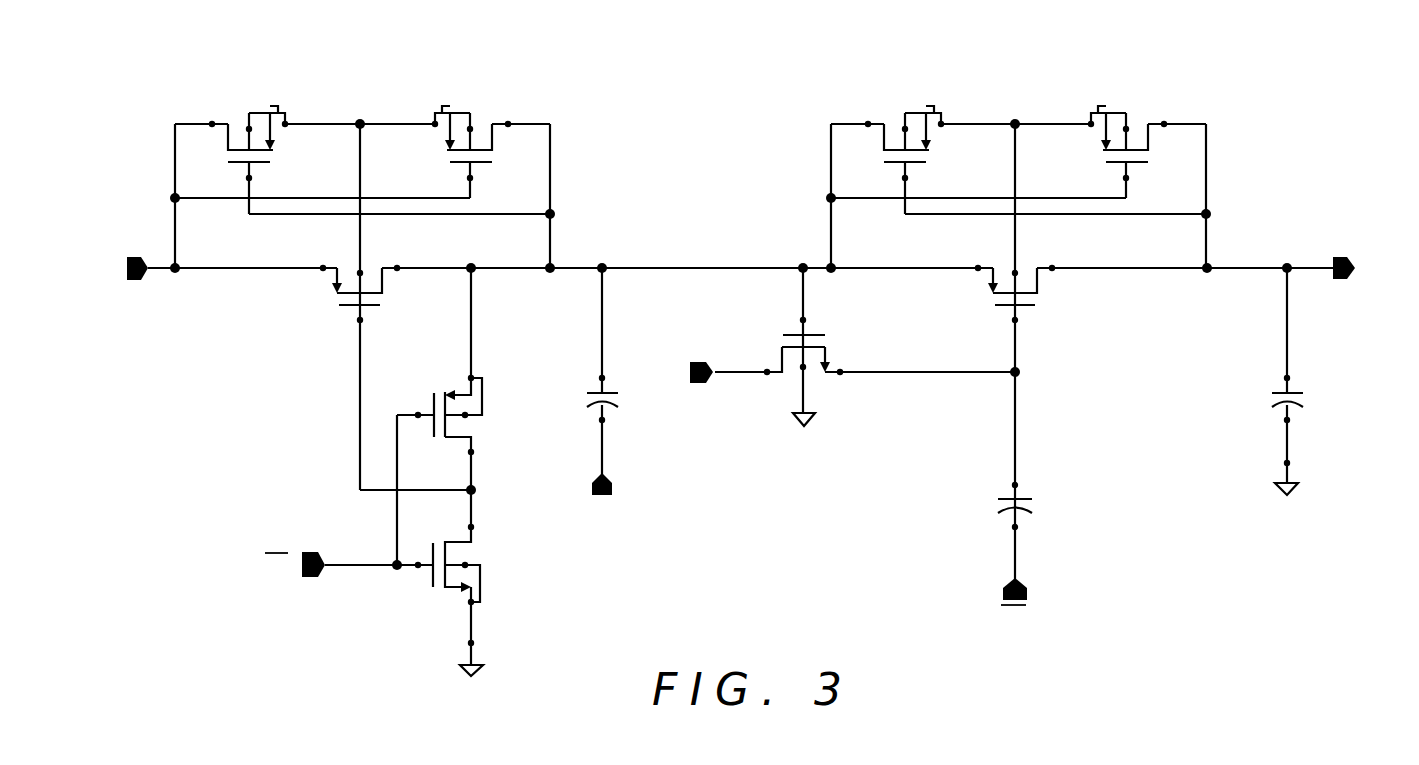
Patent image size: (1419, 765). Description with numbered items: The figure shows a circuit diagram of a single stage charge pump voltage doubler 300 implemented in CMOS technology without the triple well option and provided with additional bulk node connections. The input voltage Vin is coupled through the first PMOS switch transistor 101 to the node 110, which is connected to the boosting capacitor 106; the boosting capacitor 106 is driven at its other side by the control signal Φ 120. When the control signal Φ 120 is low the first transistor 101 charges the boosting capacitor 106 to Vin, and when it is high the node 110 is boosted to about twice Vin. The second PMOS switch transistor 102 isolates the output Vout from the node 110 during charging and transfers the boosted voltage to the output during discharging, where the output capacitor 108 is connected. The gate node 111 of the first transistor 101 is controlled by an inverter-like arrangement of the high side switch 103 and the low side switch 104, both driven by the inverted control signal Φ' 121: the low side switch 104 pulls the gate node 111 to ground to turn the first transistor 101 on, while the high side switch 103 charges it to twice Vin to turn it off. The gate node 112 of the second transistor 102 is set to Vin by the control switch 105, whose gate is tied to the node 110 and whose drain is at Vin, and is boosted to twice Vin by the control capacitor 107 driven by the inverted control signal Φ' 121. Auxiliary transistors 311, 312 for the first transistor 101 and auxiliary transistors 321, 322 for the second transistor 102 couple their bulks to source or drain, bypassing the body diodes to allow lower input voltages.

The voltage doubler 300 is at (742, 369).
The auxiliary transistor 311 is at (228, 112).
The auxiliary transistor 312 is at (492, 112).
The auxiliary transistor 321 is at (883, 112).
The auxiliary transistor 322 is at (1150, 112).
The first PMOS switch transistor 101 is at (328, 292).
The second PMOS switch transistor 102 is at (1048, 293).
The high side switch 103 is at (493, 400).
The low side switch 104 is at (492, 580).
The control switch 105 is at (768, 347).
The boosting capacitor 106 is at (623, 400).
The control capacitor 107 is at (1038, 505).
The output capacitor 108 is at (1308, 400).
The node 110 is at (605, 250).
The gate node 111 is at (348, 462).
The gate node 112 is at (1022, 375).
The control signal Φ 120 is at (620, 488).
The inverted control signal Φ' 121 is at (315, 578).